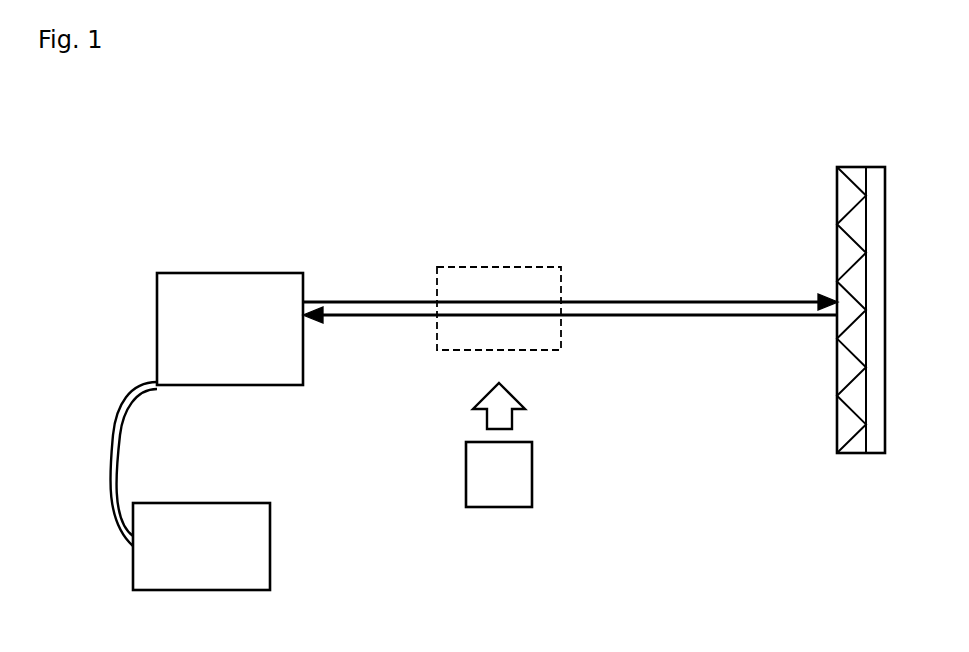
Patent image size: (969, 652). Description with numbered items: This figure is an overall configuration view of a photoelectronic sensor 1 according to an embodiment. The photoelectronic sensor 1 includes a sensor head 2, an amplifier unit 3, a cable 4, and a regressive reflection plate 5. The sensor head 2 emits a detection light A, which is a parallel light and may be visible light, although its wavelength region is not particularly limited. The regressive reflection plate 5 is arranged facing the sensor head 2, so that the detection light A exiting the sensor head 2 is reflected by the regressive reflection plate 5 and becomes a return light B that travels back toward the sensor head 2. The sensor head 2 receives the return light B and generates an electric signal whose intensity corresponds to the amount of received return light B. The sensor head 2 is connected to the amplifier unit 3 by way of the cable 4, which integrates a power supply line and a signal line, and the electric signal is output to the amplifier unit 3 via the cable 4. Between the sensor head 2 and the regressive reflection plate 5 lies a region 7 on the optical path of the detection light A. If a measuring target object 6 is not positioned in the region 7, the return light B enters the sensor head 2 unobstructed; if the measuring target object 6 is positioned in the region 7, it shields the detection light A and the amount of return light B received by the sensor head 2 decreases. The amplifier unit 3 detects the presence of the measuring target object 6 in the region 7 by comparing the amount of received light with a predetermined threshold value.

The photoelectronic sensor 1 is at (177, 156).
The sensor head 2 is at (232, 290).
The amplifier unit 3 is at (203, 523).
The cable 4 is at (113, 478).
The regressive reflection plate 5 is at (862, 167).
The measuring target object 6 is at (498, 492).
The region 7 is at (503, 267).
The detection light A is at (653, 300).
The return light B is at (653, 318).